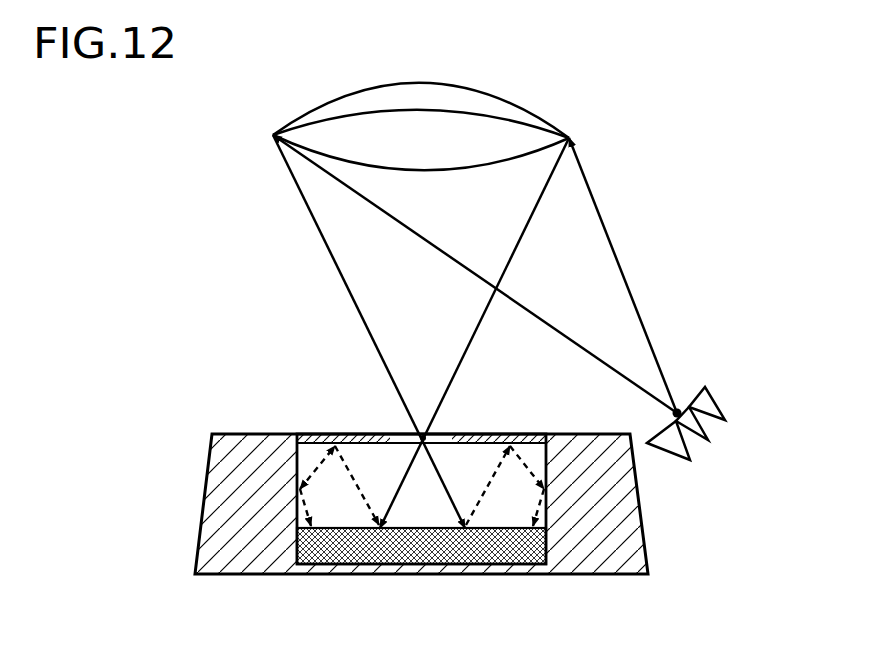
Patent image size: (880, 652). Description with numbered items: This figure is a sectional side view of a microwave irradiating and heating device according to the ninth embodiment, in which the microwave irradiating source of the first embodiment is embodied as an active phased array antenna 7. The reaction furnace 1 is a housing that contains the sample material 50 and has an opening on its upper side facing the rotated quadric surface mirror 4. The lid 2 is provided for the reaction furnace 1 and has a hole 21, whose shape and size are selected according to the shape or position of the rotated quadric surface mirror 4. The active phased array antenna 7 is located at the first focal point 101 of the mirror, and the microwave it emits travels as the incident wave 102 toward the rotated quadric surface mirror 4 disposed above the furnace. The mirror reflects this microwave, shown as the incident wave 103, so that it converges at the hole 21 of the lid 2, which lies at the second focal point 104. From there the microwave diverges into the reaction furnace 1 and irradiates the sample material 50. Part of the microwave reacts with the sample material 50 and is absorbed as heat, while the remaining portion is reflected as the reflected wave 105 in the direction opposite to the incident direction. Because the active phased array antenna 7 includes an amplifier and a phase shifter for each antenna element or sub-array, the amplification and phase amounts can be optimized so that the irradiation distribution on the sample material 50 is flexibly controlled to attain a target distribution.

The reaction furnace 1 is at (208, 487).
The lid 2 is at (334, 434).
The hole 21 is at (407, 436).
The sample material 50 is at (362, 556).
The rotated quadric surface mirror 4 is at (533, 102).
The active phased array antenna 7 is at (727, 414).
The first focal point 101 is at (680, 410).
The incident wave 102 is at (598, 211).
The incident wave 103 is at (320, 237).
The second focal point 104 is at (427, 437).
The reflected wave 105 is at (493, 493).